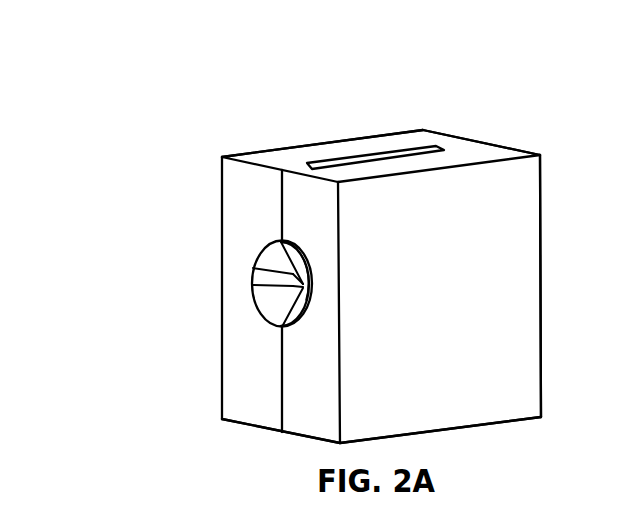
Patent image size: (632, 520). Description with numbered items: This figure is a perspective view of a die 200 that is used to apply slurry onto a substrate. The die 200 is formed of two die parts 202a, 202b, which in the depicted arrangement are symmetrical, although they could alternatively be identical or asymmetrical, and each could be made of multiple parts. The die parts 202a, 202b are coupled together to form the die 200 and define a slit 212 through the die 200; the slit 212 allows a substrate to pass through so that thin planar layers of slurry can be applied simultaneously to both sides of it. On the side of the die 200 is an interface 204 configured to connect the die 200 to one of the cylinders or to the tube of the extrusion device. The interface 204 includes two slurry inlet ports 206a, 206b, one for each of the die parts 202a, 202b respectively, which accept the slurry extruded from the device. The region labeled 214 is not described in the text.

The die 200 is at (158, 77).
The die part 202a is at (385, 142).
The die part 202b is at (483, 157).
The interface 204 is at (258, 250).
The slurry inlet port 206a is at (267, 293).
The slurry inlet port 206b is at (287, 327).
The slit 212 is at (352, 158).
The bottom surface 214 is at (486, 430).